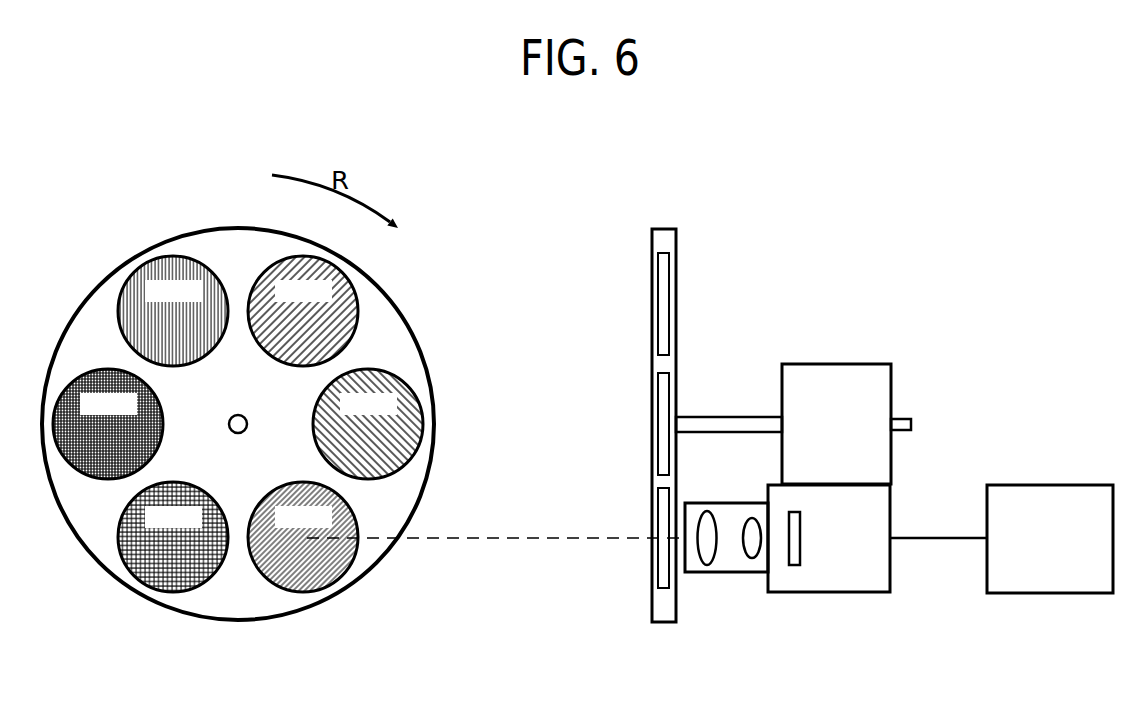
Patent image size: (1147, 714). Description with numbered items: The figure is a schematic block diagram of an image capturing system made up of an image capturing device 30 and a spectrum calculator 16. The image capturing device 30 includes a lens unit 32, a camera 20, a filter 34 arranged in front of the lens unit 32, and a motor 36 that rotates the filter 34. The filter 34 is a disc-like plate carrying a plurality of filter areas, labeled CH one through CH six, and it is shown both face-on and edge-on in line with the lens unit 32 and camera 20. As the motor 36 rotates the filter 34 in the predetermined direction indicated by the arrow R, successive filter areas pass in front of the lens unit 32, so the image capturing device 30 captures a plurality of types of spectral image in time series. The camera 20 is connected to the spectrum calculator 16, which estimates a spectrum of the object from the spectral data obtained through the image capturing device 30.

The spectrum calculator 16 is at (1065, 484).
The camera 20 is at (852, 593).
The image capturing device 30 is at (836, 590).
The lens unit 32 is at (727, 573).
The filter 34 is at (410, 327).
The motor 36 is at (851, 364).